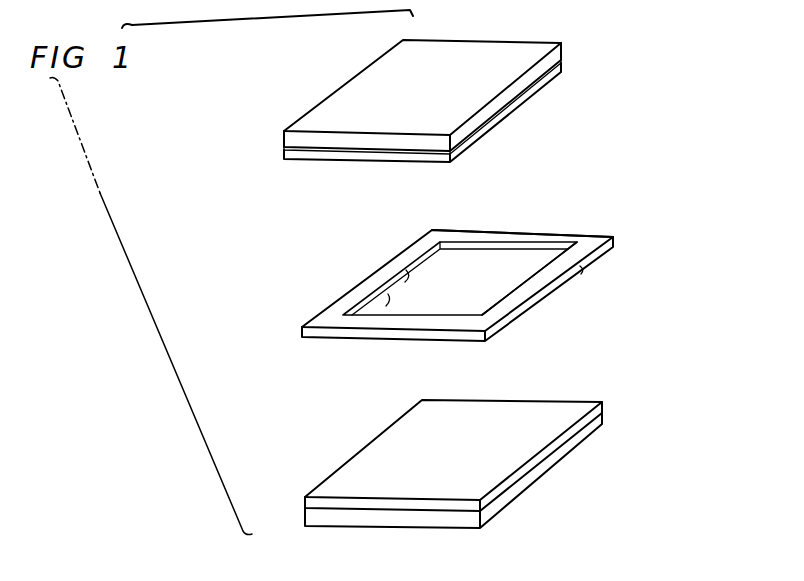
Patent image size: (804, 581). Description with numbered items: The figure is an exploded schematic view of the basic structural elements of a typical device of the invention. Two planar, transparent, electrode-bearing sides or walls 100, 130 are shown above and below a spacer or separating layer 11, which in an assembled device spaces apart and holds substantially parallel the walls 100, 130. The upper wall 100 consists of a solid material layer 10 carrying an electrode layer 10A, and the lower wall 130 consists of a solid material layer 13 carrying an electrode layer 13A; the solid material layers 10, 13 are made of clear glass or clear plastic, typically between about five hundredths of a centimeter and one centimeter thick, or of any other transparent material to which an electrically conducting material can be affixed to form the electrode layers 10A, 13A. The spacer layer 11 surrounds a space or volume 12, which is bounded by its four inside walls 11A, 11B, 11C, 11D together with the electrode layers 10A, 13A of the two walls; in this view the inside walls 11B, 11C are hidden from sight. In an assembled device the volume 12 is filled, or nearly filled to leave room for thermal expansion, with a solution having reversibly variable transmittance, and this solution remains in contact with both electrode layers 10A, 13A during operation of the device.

The electrode-bearing side 100 is at (301, 115).
The solid material layer 10 is at (538, 46).
The electrode layer 10A is at (538, 99).
The spacer or separating means 11 is at (527, 288).
The inside wall 11A is at (558, 230).
The inside wall 11B is at (527, 271).
The inside wall 11C is at (397, 308).
The inside wall 11D is at (413, 278).
The space or volume 12 is at (477, 298).
The electrode-bearing side 130 is at (330, 476).
The electrode layer 13A is at (520, 430).
The solid material layer 13 is at (540, 470).